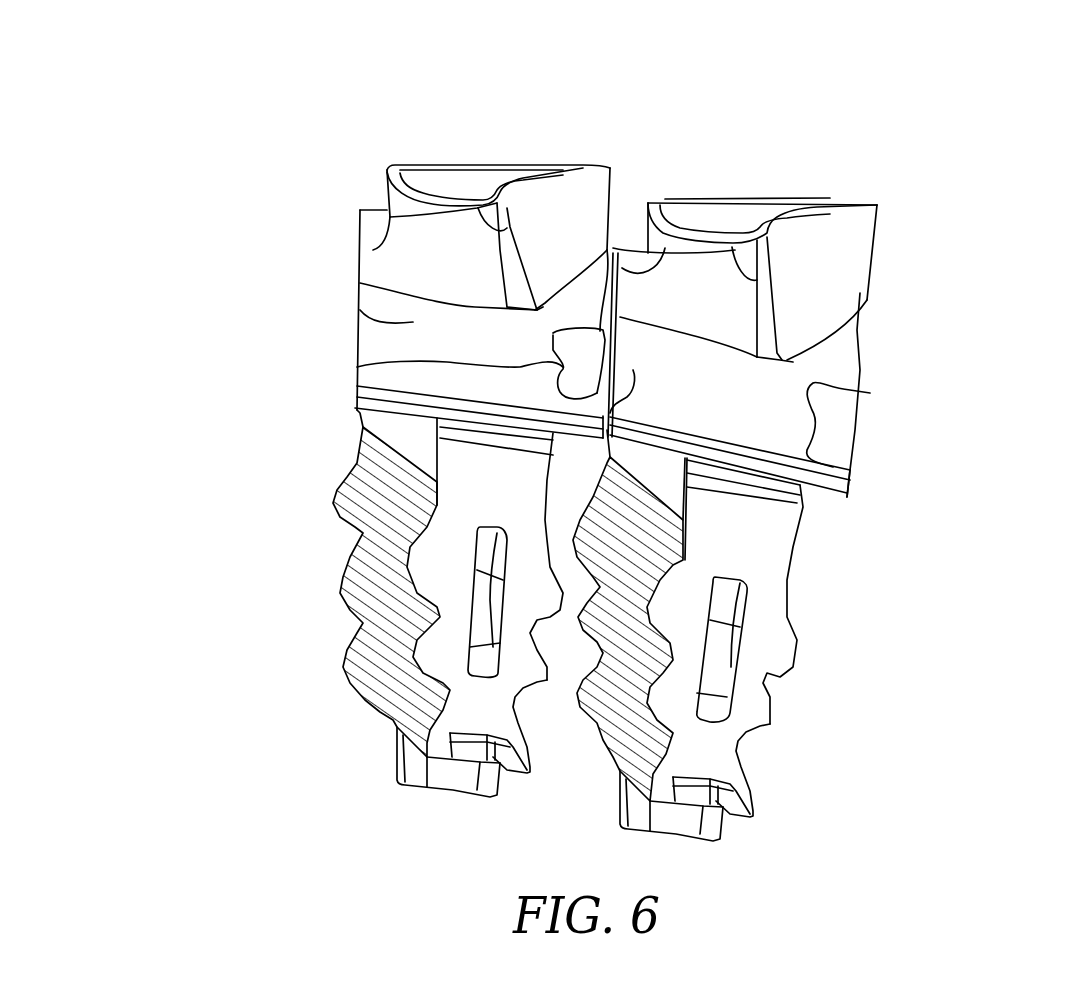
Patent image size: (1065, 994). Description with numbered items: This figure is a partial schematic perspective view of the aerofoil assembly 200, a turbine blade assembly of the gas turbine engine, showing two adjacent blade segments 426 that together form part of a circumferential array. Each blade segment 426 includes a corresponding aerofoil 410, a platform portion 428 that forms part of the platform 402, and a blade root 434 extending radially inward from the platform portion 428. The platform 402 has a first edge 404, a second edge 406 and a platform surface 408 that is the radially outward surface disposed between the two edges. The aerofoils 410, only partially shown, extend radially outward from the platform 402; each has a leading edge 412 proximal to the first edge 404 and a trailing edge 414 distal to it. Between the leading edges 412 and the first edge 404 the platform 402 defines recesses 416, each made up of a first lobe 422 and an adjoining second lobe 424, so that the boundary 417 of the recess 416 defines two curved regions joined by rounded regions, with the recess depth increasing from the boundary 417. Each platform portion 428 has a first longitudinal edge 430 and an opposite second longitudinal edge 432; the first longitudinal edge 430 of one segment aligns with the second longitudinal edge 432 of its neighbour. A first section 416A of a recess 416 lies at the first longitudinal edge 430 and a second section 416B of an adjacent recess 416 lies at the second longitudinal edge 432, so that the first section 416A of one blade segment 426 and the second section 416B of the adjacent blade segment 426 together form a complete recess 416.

The aerofoil assembly 200 is at (237, 89).
The platform 402 is at (928, 393).
The first edge 404 is at (377, 407).
The second edge 406 is at (385, 210).
The platform surface 408 is at (510, 345).
The aerofoil 410 is at (430, 137).
The leading edge 412 is at (443, 213).
The trailing edge 414 is at (607, 250).
The recess 416 is at (660, 395).
The first section 416A is at (837, 370).
The second section 416B is at (366, 302).
The boundary 417 is at (385, 366).
The first lobe 422 is at (590, 347).
The second lobe 424 is at (597, 390).
The blade segment 426 is at (334, 351).
The platform portion 428 is at (413, 322).
The first longitudinal edge 430 is at (600, 287).
The second longitudinal edge 432 is at (362, 268).
The blade root 434 is at (465, 469).